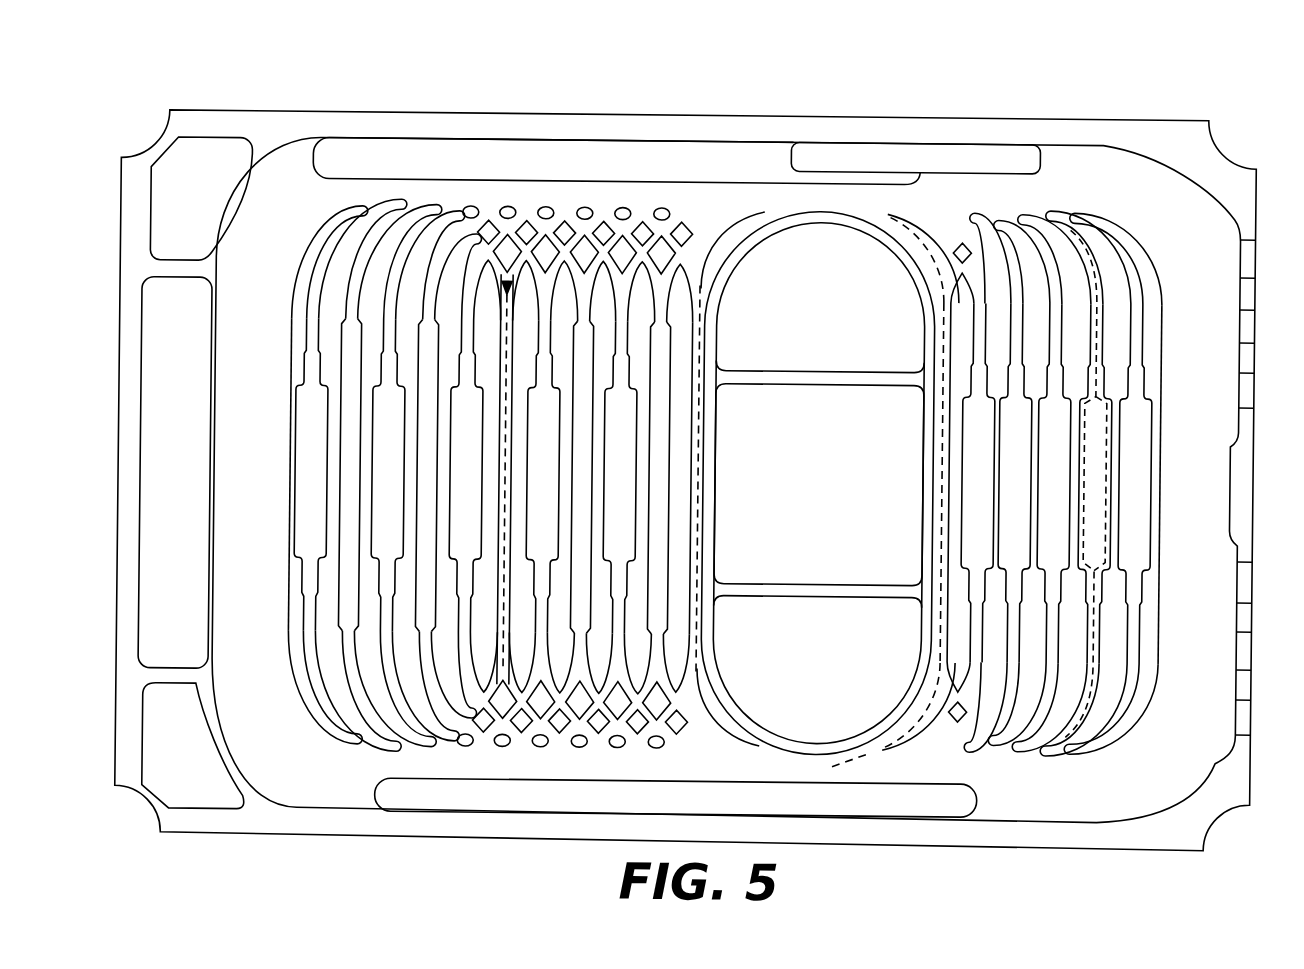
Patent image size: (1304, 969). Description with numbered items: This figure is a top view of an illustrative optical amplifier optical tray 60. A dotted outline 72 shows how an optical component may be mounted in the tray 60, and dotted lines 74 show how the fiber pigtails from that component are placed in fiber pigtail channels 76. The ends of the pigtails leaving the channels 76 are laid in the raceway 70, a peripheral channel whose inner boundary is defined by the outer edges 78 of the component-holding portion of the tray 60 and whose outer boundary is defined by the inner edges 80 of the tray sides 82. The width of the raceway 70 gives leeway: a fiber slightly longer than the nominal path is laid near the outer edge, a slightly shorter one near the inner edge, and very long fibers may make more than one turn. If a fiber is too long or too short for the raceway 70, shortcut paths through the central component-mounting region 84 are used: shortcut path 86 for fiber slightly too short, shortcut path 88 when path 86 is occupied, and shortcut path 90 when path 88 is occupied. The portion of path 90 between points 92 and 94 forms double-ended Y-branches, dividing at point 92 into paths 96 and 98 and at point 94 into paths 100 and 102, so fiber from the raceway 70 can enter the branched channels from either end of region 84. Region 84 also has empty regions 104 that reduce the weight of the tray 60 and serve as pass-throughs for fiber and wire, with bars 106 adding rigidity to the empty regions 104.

The tray 60 is at (1112, 90).
The raceway 70 is at (281, 192).
The dotted outline 72 is at (1112, 448).
The dotted lines 74 is at (1022, 215).
The fiber pigtail channels 76 is at (1095, 224).
The outer edges 78 is at (402, 210).
The inner edges 80 is at (583, 143).
The tray sides 82 is at (558, 125).
The central component-mounting region 84 is at (526, 204).
The shortcut path 86 is at (877, 210).
The shortcut path 88 is at (638, 210).
The shortcut path 90 is at (436, 205).
The point 92 is at (480, 238).
The point 94 is at (506, 682).
The path 96 is at (474, 240).
The path 98 is at (535, 250).
The path 100 is at (462, 724).
The path 102 is at (553, 728).
The empty regions 104 is at (829, 262).
The bars 106 is at (772, 377).